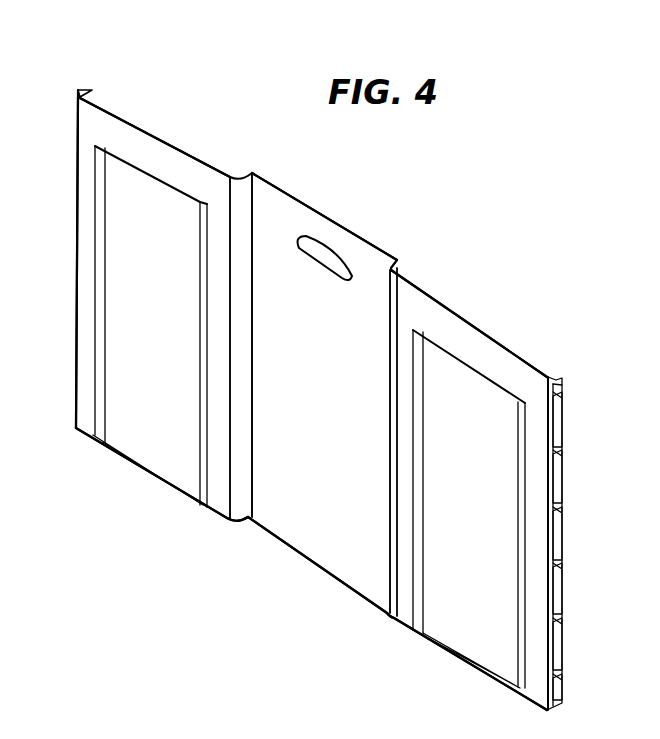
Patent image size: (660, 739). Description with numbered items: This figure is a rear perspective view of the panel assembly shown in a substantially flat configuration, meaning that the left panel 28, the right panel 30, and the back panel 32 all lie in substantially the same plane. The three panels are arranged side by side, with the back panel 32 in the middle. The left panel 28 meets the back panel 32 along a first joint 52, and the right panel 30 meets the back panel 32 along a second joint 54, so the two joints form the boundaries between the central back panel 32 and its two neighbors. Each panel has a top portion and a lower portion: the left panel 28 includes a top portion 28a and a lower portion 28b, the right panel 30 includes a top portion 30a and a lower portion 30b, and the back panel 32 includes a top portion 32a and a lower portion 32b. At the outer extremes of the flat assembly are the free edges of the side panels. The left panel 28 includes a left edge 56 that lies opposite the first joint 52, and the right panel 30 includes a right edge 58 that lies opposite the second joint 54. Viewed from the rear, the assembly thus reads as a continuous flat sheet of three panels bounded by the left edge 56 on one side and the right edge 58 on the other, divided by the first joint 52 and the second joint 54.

The left panel 28 is at (505, 342).
The top portion of left panel 28a is at (457, 312).
The lower portion of left panel 28b is at (442, 652).
The right panel 30 is at (128, 110).
The top portion of right panel 30a is at (173, 137).
The lower portion of right panel 30b is at (127, 462).
The back panel 32 is at (338, 212).
The top portion of back panel 32a is at (292, 190).
The lower portion of back panel 32b is at (322, 563).
The first joint 52 is at (387, 580).
The second joint 54 is at (237, 507).
The left edge 56 is at (548, 483).
The right edge 58 is at (77, 255).